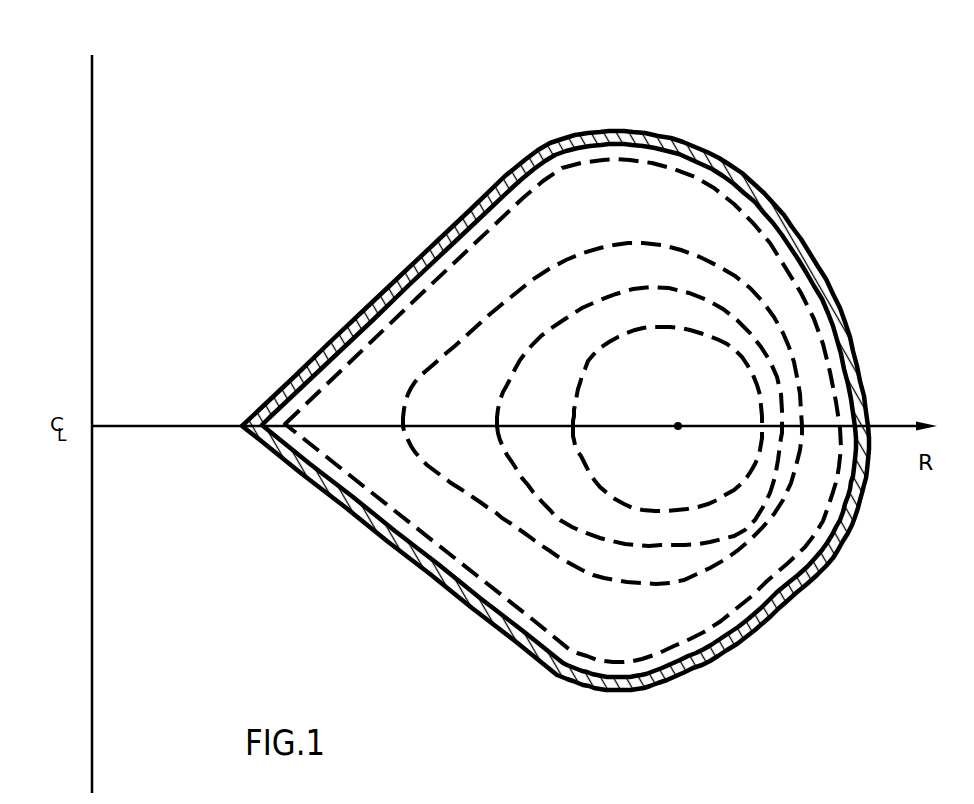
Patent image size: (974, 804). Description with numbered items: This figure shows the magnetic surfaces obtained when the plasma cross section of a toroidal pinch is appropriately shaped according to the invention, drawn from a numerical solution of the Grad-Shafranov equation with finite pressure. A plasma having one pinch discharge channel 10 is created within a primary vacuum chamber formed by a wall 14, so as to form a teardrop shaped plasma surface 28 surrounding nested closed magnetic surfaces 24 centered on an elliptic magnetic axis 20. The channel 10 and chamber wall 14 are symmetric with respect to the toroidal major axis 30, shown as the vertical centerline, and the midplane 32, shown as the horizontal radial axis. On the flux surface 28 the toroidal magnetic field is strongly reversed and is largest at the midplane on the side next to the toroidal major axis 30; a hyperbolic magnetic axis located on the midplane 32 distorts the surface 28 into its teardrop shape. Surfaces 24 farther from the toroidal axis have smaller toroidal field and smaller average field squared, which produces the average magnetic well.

The pinch discharge channel 10 is at (667, 400).
The wall 14 is at (732, 653).
The elliptic magnetic axis 20 is at (675, 429).
The nested closed magnetic surfaces 24 is at (602, 413).
The plasma surface 28 is at (603, 160).
The toroidal major axis 30 is at (93, 262).
The midplane 32 is at (894, 427).